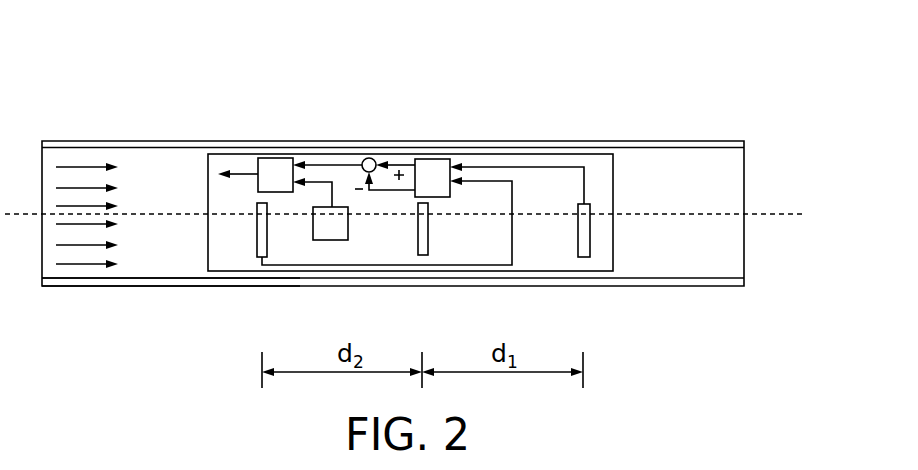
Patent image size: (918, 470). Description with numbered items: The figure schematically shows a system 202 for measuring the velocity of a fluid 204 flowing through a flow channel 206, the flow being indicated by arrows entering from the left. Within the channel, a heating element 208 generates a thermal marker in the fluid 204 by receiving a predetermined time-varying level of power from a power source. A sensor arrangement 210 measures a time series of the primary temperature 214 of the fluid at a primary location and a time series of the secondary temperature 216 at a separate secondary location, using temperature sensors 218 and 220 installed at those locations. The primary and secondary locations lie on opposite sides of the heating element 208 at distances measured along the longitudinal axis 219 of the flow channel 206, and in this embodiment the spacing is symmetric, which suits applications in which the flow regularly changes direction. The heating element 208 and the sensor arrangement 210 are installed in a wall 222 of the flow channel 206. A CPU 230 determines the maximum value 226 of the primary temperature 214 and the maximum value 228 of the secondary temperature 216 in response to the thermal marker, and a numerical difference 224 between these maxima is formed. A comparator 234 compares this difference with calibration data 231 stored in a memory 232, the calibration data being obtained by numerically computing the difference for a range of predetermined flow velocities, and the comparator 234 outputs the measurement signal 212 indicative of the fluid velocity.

The system 202 is at (251, 256).
The fluid 204 is at (191, 190).
The flow channel 206 is at (698, 287).
The heating element 208 is at (425, 230).
The sensor arrangement 210 is at (252, 78).
The measurement signal 212 is at (238, 172).
The primary temperature 214 is at (532, 167).
The secondary temperature 216 is at (507, 267).
The temperature sensor 218 is at (585, 240).
The longitudinal axis 219 is at (784, 212).
The temperature sensor 220 is at (265, 240).
The wall 222 is at (168, 287).
The numerical difference 224 is at (343, 166).
The maximum value 226 is at (392, 195).
The maximum value 228 is at (397, 162).
The CPU 230 is at (432, 163).
The calibration data 231 is at (340, 193).
The memory 232 is at (330, 233).
The comparator 234 is at (280, 165).